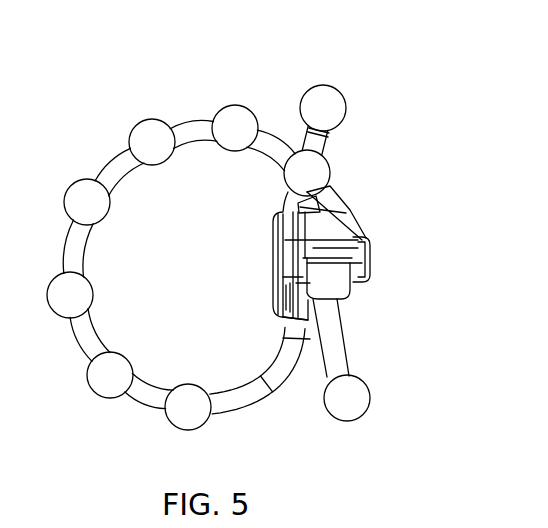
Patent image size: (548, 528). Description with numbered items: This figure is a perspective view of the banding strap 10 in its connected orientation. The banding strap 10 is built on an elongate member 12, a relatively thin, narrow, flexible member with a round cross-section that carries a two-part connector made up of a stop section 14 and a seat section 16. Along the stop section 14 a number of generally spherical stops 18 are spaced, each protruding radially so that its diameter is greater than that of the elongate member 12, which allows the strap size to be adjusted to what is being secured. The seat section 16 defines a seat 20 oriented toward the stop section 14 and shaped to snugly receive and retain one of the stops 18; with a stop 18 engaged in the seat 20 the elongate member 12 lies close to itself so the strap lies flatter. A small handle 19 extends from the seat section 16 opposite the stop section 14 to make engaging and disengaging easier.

The banding strap 10 is at (423, 107).
The elongate member 12 is at (150, 412).
The stop section 14 is at (236, 86).
The seat section 16 is at (392, 277).
The stops 18 is at (68, 185).
The handle 19 is at (343, 120).
The seat 20 is at (300, 283).